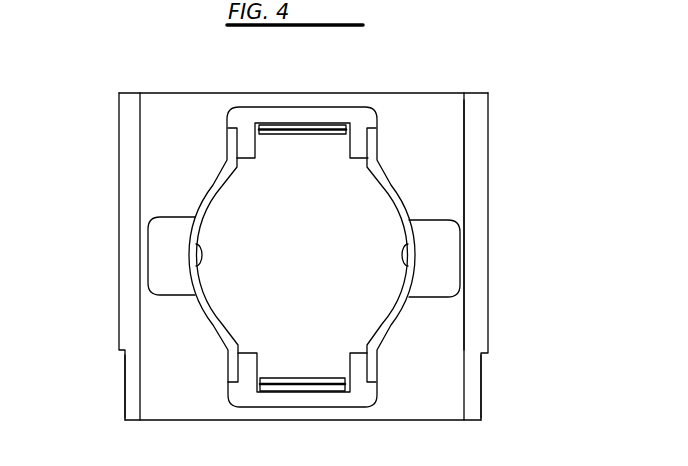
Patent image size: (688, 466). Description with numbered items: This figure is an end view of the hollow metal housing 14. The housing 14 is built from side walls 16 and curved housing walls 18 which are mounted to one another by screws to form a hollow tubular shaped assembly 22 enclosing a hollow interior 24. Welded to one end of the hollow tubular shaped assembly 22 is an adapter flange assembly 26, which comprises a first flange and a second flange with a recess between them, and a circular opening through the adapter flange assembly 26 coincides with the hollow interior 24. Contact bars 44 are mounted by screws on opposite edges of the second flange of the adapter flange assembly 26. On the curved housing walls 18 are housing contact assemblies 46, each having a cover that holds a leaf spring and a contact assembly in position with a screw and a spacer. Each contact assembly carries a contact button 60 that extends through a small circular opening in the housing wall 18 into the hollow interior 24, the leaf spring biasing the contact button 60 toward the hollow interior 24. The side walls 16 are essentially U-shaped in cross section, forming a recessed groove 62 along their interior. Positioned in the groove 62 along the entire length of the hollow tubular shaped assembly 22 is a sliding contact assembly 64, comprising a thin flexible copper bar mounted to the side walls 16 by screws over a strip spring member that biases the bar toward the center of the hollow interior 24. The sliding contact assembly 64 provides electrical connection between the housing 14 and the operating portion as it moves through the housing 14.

The hollow metal housing 14 is at (450, 68).
The side walls 16 is at (357, 115).
The curved housing walls 18 is at (401, 194).
The hollow tubular shaped assembly 22 is at (441, 138).
The hollow interior 24 is at (313, 257).
The adapter flange assembly 26 is at (515, 328).
The contact bars 44 is at (125, 383).
The housing contact assemblies 46 is at (456, 215).
The contact button 60 is at (403, 258).
The recessed groove 62 is at (309, 137).
The sliding contact assembly 64 is at (309, 131).